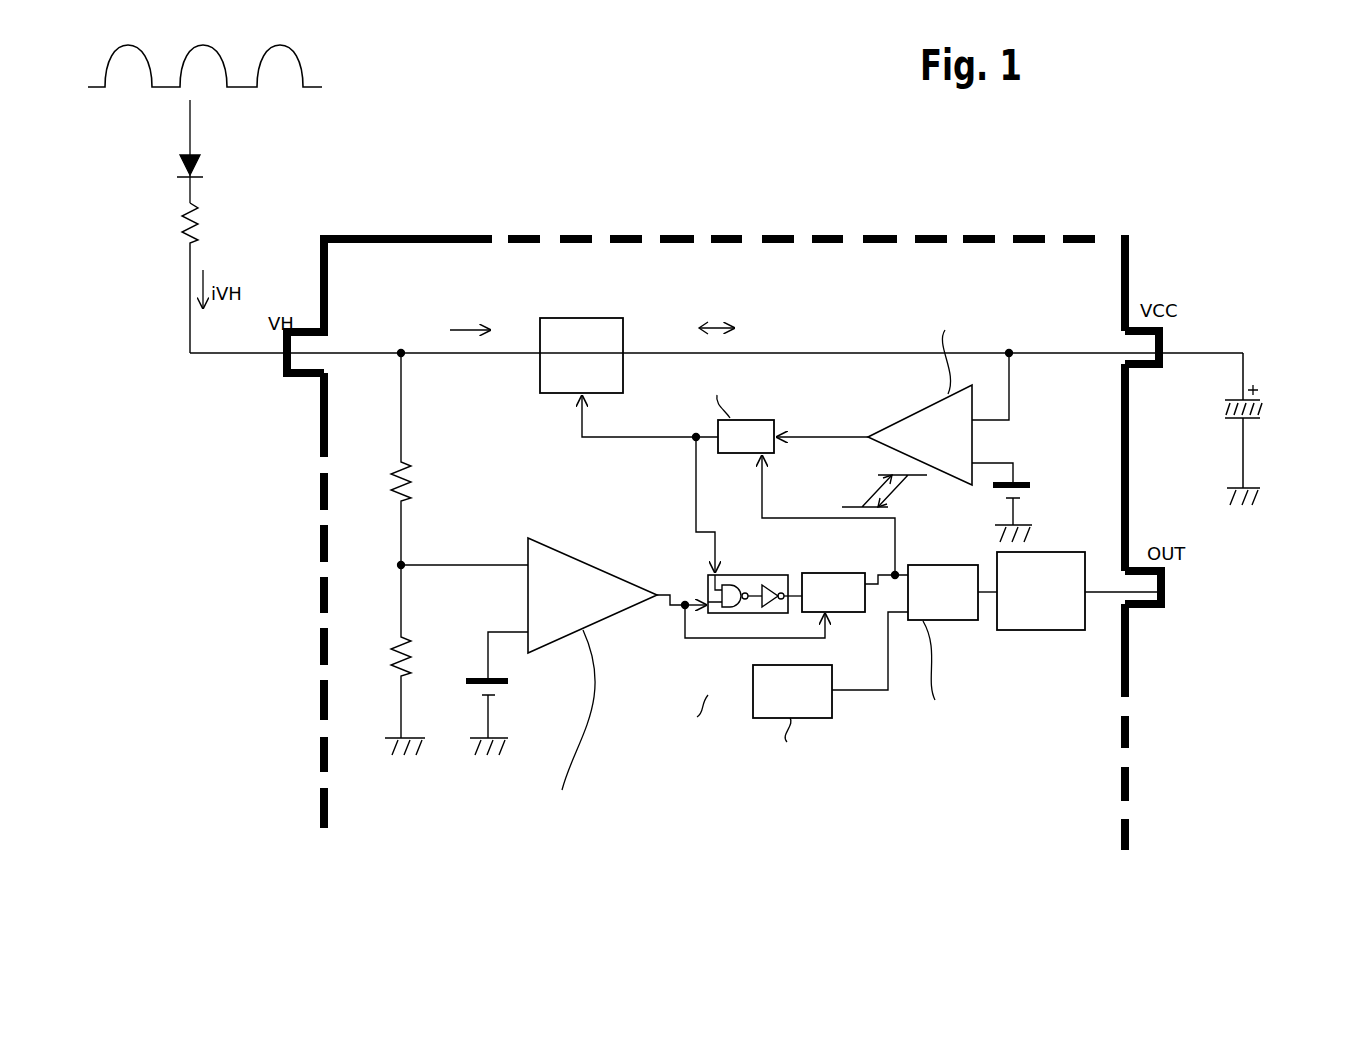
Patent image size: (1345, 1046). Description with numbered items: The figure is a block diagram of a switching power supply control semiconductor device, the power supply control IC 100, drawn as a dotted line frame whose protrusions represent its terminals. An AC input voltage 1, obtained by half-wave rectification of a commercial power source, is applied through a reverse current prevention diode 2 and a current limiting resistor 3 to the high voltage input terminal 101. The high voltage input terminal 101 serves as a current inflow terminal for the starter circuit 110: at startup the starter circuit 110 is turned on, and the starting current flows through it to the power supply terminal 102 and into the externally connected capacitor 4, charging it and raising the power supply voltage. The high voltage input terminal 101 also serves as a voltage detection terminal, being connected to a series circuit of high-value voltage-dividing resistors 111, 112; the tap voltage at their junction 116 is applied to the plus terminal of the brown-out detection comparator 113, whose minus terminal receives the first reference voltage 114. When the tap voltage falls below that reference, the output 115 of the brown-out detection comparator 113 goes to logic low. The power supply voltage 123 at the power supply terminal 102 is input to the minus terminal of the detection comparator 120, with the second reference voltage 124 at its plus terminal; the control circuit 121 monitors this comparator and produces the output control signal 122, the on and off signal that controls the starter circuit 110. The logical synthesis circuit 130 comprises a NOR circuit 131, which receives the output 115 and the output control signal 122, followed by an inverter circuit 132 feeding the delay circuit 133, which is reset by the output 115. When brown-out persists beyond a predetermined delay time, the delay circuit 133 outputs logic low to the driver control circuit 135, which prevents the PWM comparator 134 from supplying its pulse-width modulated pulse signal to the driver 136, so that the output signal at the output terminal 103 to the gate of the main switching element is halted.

The AC input voltage 1 is at (152, 92).
The reverse current prevention diode 2 is at (202, 167).
The current limiting resistor RVH 3 is at (173, 227).
The capacitor 4 is at (1262, 408).
The power supply control IC 100 is at (840, 270).
The terminal VH 101 is at (283, 372).
The terminal VCC 102 is at (1165, 338).
The terminal OUT 103 is at (1167, 588).
The starter circuit 110 is at (580, 318).
The voltage-dividing resistor R1 111 is at (410, 476).
The voltage-dividing resistor R2 112 is at (417, 650).
The brown-out detection comparator 113 is at (575, 559).
The reference voltage VREF1 114 is at (506, 686).
The output of the brown-out detection comparator 115 is at (672, 608).
The junction 116 is at (408, 560).
The VCC detection comparator 120 is at (917, 410).
The control circuit 121 is at (753, 418).
The output control signal 122 is at (718, 446).
The power supply voltage 123 is at (1003, 421).
The reference voltage VREF2 124 is at (1024, 490).
The logical synthesis circuit 130 is at (709, 633).
The NOR circuit 131 is at (730, 583).
The inverter circuit 132 is at (770, 585).
The delay circuit 133 is at (835, 573).
The PWM comparator 134 is at (793, 665).
The driver control circuit 135 is at (942, 622).
The driver 136 is at (1040, 630).